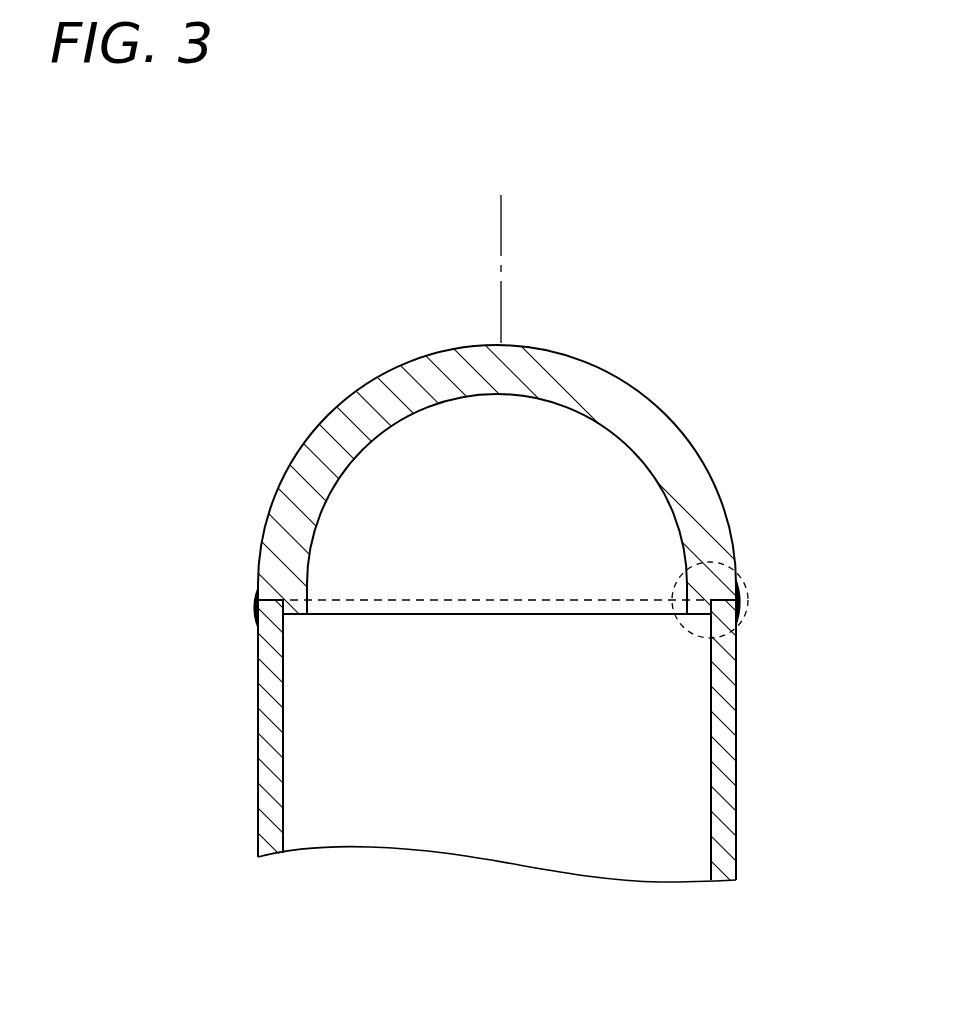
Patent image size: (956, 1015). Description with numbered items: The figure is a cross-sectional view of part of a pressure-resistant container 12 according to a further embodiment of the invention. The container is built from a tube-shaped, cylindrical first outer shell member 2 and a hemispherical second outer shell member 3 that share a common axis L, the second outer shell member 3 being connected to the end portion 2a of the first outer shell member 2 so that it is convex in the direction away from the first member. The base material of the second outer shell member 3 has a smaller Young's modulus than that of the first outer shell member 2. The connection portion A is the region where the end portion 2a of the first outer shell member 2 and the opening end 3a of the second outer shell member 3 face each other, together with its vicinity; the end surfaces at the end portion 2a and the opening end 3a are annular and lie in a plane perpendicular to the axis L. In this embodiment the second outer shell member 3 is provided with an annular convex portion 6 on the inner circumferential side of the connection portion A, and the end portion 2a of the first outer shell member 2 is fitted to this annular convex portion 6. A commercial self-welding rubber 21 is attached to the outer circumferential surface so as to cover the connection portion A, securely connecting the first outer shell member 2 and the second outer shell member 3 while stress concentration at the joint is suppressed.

The pressure-resistant container 12 is at (336, 154).
The axis L is at (502, 228).
The second outer shell member 3 is at (678, 470).
The opening end 3a is at (276, 588).
The annular convex portion 6 is at (300, 602).
The first outer shell member 2 is at (722, 714).
The end portion 2a is at (270, 622).
The self-welding rubber 21 is at (256, 608).
The connection portion A is at (751, 592).